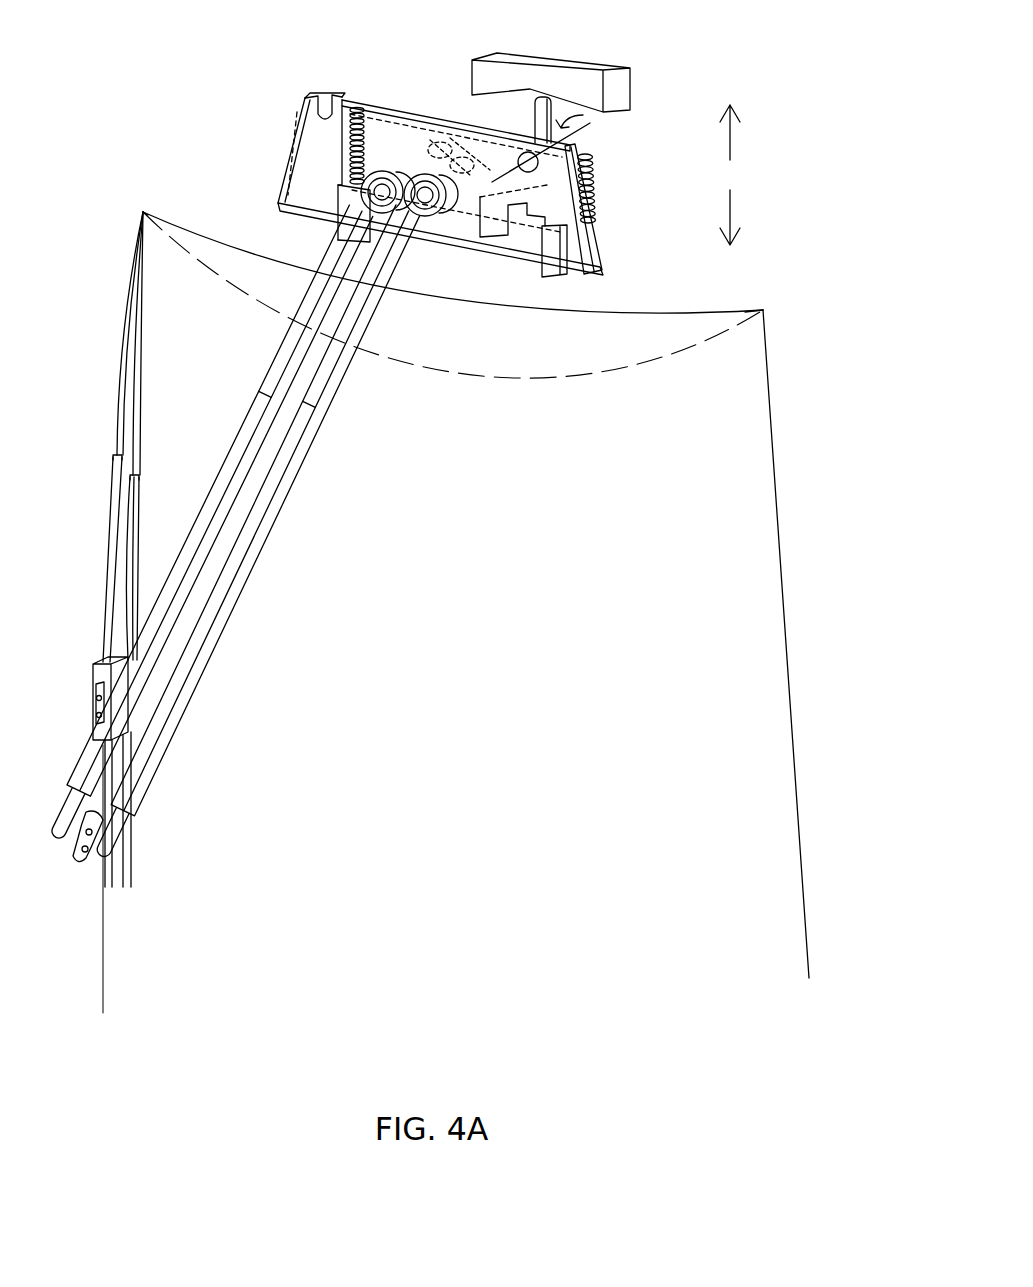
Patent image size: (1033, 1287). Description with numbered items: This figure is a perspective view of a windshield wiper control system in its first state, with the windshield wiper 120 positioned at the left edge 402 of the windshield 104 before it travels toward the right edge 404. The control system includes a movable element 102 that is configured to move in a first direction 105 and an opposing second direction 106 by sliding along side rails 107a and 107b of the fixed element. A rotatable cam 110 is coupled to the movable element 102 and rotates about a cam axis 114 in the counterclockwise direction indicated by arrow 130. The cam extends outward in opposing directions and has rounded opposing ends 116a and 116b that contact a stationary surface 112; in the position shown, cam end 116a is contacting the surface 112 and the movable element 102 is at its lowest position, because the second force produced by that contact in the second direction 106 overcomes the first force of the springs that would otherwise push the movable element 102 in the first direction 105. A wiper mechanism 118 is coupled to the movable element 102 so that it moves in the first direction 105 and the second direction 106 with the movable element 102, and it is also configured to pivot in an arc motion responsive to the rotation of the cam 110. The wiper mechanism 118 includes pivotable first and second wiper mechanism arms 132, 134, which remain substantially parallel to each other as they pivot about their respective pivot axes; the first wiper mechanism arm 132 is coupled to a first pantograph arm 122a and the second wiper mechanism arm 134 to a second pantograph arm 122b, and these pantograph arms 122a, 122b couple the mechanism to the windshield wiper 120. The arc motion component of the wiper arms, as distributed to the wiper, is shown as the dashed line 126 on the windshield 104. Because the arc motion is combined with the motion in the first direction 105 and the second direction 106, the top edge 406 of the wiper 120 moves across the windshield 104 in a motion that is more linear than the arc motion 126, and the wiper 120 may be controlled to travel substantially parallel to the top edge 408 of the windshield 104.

The movable element 102 is at (348, 128).
The windshield 104 is at (745, 432).
The first direction 105 is at (730, 133).
The second direction 106 is at (730, 217).
The side rail 107a is at (563, 247).
The side rail 107b is at (352, 201).
The rotatable cam 110 is at (497, 128).
The stationary surface 112 is at (593, 125).
The cam axis 114 is at (502, 175).
The cam end 116a is at (540, 112).
The cam end 116b is at (547, 232).
The wiper mechanism 118 is at (407, 158).
The windshield wiper 120 is at (130, 288).
The pantograph arm 122a is at (252, 435).
The pantograph arm 122b is at (235, 560).
The arc motion 126 is at (623, 367).
The counterclockwise direction 130 is at (593, 133).
The first wiper mechanism arm 132 is at (407, 157).
The second wiper mechanism arm 134 is at (453, 168).
The left edge 402 is at (105, 986).
The right edge 404 is at (800, 886).
The top edge of wiper 406 is at (143, 208).
The top edge of windshield 408 is at (662, 313).